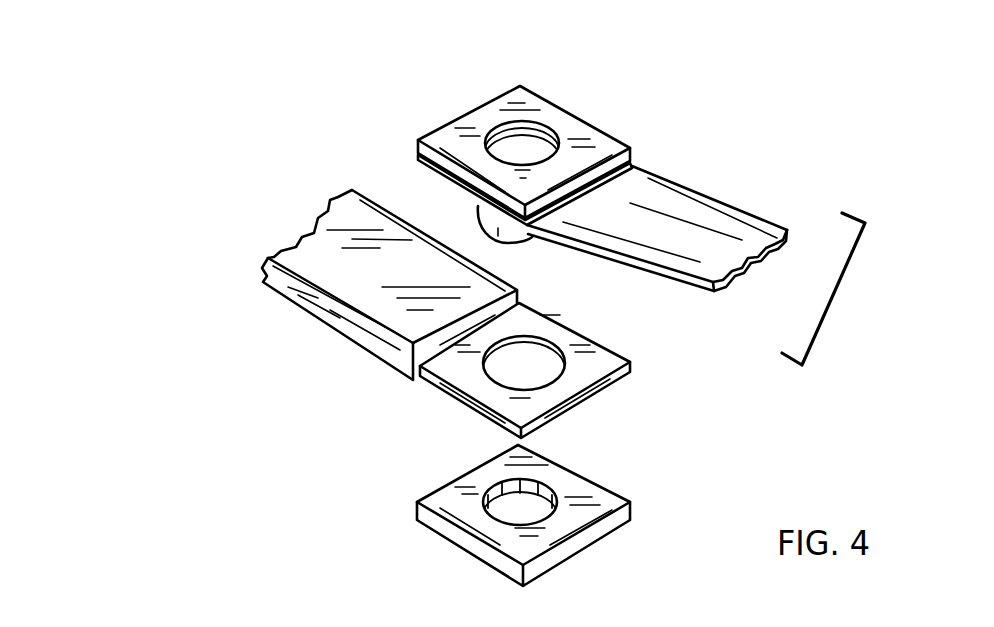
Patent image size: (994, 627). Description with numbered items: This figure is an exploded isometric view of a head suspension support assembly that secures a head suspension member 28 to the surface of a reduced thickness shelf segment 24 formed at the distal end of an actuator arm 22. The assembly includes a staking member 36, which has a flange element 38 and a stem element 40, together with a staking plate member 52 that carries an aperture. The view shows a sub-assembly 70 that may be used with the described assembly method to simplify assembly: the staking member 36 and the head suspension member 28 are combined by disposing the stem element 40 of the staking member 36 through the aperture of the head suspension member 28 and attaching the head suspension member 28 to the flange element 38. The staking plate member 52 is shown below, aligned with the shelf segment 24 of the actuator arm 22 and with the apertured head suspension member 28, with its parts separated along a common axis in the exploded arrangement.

The actuator arm 22 is at (378, 190).
The reduced thickness shelf segment 24 is at (590, 387).
The head suspension member 28 is at (752, 205).
The staking member 36 is at (647, 113).
The flange element 38 is at (634, 164).
The stem element 40 is at (478, 220).
The staking plate member 52 is at (432, 543).
The sub-assembly 70 is at (841, 303).